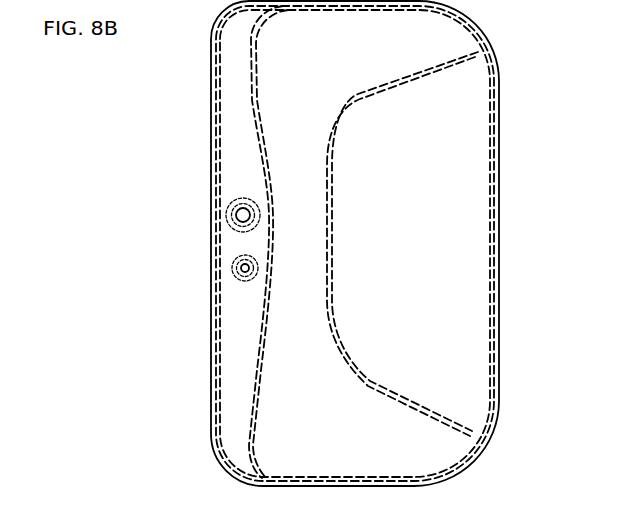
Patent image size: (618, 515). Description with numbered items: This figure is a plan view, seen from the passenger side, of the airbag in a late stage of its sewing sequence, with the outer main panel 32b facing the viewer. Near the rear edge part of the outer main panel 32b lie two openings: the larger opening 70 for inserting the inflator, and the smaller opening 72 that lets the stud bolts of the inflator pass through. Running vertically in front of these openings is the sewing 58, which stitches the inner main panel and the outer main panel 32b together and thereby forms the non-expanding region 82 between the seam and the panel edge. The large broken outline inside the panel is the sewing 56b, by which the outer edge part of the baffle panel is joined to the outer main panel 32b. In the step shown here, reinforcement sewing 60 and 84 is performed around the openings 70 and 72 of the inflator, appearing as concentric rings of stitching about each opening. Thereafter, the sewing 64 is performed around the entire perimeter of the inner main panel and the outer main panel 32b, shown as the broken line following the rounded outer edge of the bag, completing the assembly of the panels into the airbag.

The outer main panel 32b is at (461, 254).
The sewing 64 is at (494, 387).
The reinforcement sewing 84 is at (219, 242).
The non-expanding region 82 is at (233, 146).
The sewing 58 is at (258, 95).
The sewing 56b is at (452, 66).
The opening 70 is at (235, 217).
The opening 72 is at (238, 278).
The reinforcement sewing 60 is at (252, 281).